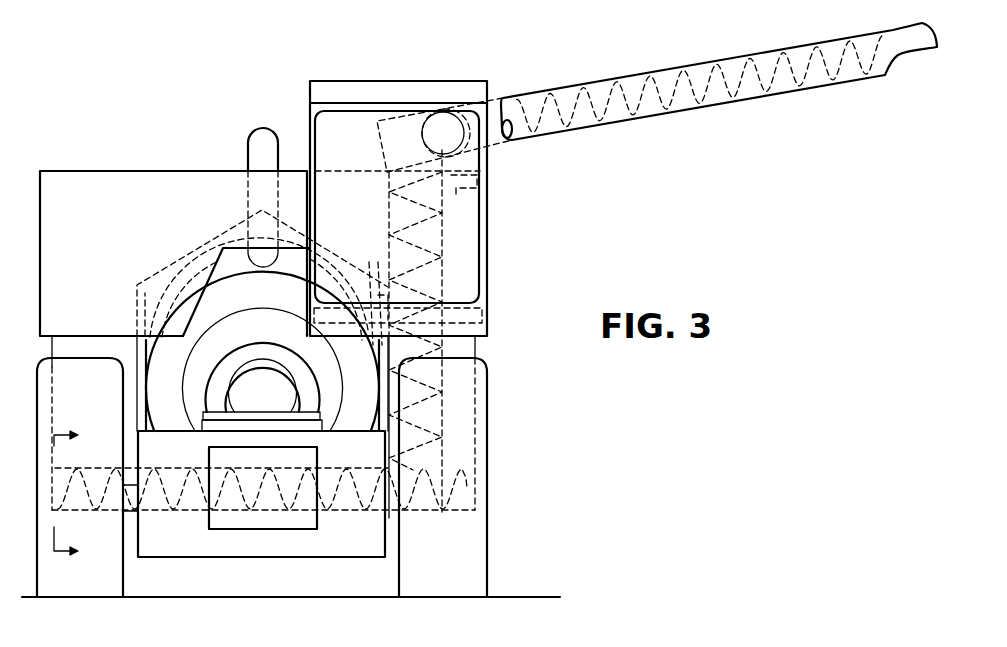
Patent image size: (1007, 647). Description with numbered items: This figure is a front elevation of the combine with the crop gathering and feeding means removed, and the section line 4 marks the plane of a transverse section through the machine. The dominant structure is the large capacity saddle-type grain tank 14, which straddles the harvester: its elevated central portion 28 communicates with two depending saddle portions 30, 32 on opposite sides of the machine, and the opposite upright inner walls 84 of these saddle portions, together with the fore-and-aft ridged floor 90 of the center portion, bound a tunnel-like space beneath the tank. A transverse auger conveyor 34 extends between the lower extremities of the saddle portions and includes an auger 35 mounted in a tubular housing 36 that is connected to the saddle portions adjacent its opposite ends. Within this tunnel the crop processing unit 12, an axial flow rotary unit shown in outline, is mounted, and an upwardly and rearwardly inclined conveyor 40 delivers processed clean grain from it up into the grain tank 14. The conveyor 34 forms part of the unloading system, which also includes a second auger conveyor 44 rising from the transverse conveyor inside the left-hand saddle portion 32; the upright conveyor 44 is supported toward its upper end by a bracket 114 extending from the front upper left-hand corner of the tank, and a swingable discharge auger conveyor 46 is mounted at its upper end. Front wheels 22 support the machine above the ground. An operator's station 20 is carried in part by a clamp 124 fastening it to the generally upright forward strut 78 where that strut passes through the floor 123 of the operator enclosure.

The section line 4- 4 is at (66, 495).
The crop processing unit 12 is at (248, 306).
The grain tank 14 is at (138, 164).
The operator's station 20 is at (401, 80).
The front wheels 22 is at (124, 568).
The elevated central portion 28 is at (140, 214).
The saddle portion 30 is at (68, 347).
The saddle portion 32 is at (477, 353).
The transverse auger conveyor 34 is at (153, 521).
The auger 35 is at (264, 513).
The tubular housing 36 is at (338, 512).
The inclined conveyor 40 is at (257, 135).
The second auger conveyor 44 is at (381, 230).
The swingable discharge auger conveyor 46 is at (662, 63).
The forward strut 78 is at (136, 351).
The inner walls 84 is at (138, 318).
The ridged floor 90 is at (177, 262).
The bracket 114 is at (478, 190).
The floor 123 is at (482, 311).
The clamp 124 is at (383, 292).